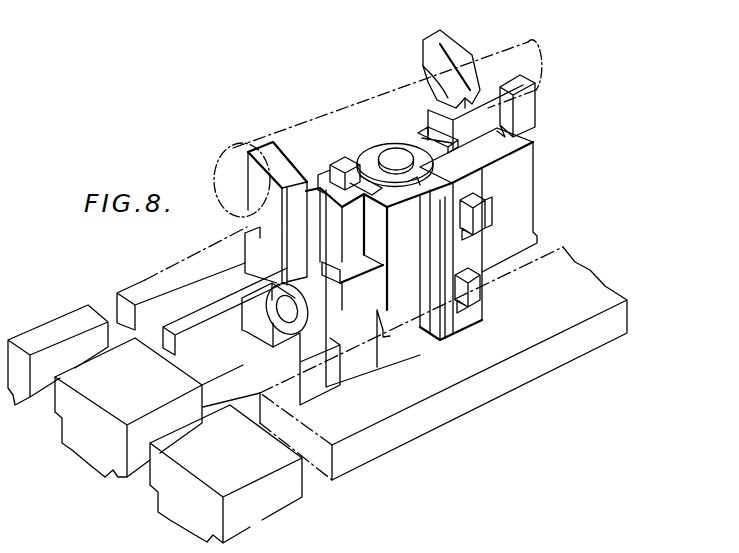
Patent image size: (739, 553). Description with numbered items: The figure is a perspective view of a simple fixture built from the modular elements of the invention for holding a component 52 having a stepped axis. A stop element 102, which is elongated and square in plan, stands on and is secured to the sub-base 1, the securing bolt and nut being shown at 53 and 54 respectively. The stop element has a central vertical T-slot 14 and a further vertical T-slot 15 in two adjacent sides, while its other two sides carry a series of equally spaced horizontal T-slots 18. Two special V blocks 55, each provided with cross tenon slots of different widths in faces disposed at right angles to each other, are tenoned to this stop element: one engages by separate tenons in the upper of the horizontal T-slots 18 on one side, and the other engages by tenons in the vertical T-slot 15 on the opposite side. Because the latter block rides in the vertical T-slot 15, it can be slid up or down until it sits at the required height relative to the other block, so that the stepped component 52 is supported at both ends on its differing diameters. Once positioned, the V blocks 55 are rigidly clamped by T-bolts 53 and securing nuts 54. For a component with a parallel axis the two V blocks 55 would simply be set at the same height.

The sub-base 1 is at (520, 368).
The vertical T-slot 14 is at (423, 340).
The vertical T-slot 15 is at (337, 163).
The horizontal T-slots 18 is at (468, 212).
The component 52 is at (413, 88).
The securing bolt 53 is at (380, 155).
The securing nut 54 is at (397, 162).
The V blocks 55 is at (255, 248).
The stop element 102 is at (385, 337).